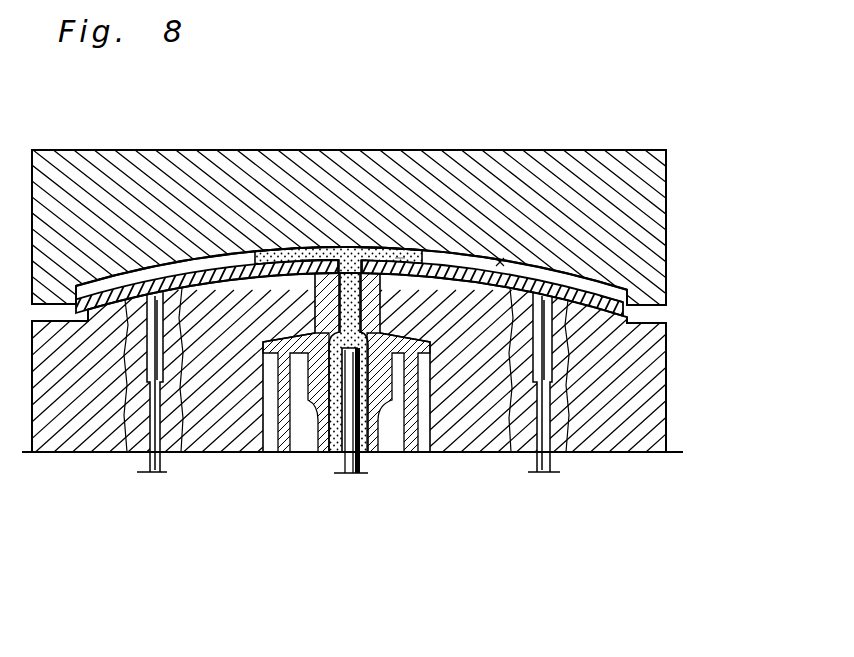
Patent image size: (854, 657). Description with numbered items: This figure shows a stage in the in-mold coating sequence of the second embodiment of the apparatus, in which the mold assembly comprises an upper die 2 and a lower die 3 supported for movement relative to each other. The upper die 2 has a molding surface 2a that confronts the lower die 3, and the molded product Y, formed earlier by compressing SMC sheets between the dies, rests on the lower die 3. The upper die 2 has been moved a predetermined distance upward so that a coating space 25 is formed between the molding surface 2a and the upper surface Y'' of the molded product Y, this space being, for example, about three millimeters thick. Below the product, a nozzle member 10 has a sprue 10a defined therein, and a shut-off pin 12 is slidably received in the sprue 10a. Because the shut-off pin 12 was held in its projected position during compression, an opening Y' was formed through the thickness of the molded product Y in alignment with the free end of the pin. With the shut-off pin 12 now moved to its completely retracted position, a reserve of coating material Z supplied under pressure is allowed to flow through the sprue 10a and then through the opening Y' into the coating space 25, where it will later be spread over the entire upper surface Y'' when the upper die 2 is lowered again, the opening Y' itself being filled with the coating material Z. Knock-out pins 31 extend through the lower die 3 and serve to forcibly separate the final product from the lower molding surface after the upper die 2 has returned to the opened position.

The upper die 2 is at (608, 172).
The molding surface 2a is at (566, 256).
The lower die 3 is at (637, 391).
The molded product Y is at (358, 197).
The opening Y' is at (328, 170).
The upper surface Y'' is at (675, 280).
The nozzle member 10 is at (372, 262).
The sprue 10a is at (322, 256).
The coating material Z is at (400, 258).
The coating space 25 is at (500, 262).
The shut-off pin 12 is at (343, 476).
The knock-out pins 31 is at (162, 456).